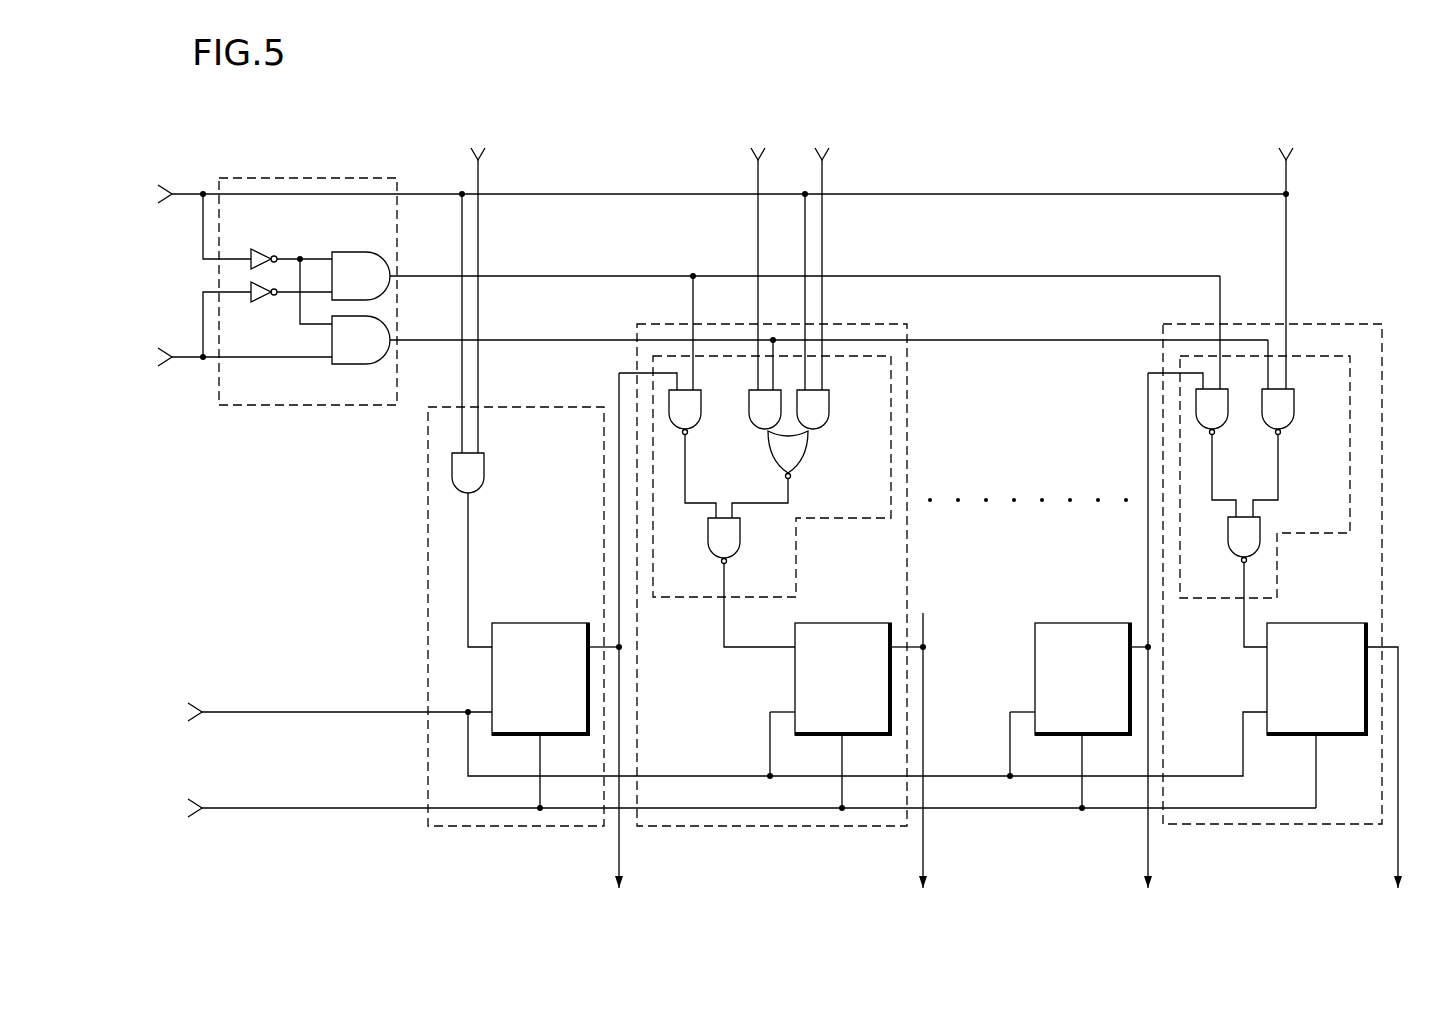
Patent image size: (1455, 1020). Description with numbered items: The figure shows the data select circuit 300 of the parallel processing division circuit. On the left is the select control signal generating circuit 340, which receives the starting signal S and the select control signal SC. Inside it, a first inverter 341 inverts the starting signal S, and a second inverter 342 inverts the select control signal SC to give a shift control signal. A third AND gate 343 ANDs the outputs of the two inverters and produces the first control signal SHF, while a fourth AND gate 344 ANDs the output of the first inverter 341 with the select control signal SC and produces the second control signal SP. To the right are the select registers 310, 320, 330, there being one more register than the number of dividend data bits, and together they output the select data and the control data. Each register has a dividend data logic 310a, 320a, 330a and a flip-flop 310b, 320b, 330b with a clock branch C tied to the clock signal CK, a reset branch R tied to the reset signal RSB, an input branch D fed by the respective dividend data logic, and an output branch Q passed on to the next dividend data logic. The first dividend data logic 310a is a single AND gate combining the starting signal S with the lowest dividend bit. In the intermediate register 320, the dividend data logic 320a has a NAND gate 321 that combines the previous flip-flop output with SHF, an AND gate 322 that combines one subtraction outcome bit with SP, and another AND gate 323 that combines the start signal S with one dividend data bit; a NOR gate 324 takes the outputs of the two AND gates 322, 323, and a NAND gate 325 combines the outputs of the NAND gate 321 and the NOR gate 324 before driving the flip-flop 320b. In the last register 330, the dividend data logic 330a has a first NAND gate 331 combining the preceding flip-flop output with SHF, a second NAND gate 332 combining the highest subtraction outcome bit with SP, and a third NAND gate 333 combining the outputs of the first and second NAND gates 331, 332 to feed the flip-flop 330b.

The data select circuit 300 is at (615, 64).
The select register 310 is at (516, 828).
The dividend data logic 310a is at (503, 550).
The flip-flop 310b is at (539, 623).
The select register 320 is at (770, 828).
The dividend data logic 320a is at (677, 600).
The flip-flop 320b is at (845, 623).
The NAND gate 321 is at (692, 420).
The AND gate 322 is at (741, 409).
The AND gate 323 is at (835, 409).
The NOR gate 324 is at (791, 474).
The NAND gate 325 is at (729, 582).
The select register 330 is at (1283, 826).
The dividend data logic 330a is at (1203, 600).
The flip-flop 330b is at (1318, 623).
The first NAND gate 331 is at (1227, 453).
The second NAND gate 332 is at (1295, 453).
The third NAND gate 333 is at (1224, 582).
The select control signal generating circuit 340 is at (312, 178).
The first inverter 341 is at (258, 248).
The second inverter 342 is at (258, 303).
The third AND gate 343 is at (361, 263).
The fourth AND gate 344 is at (361, 356).